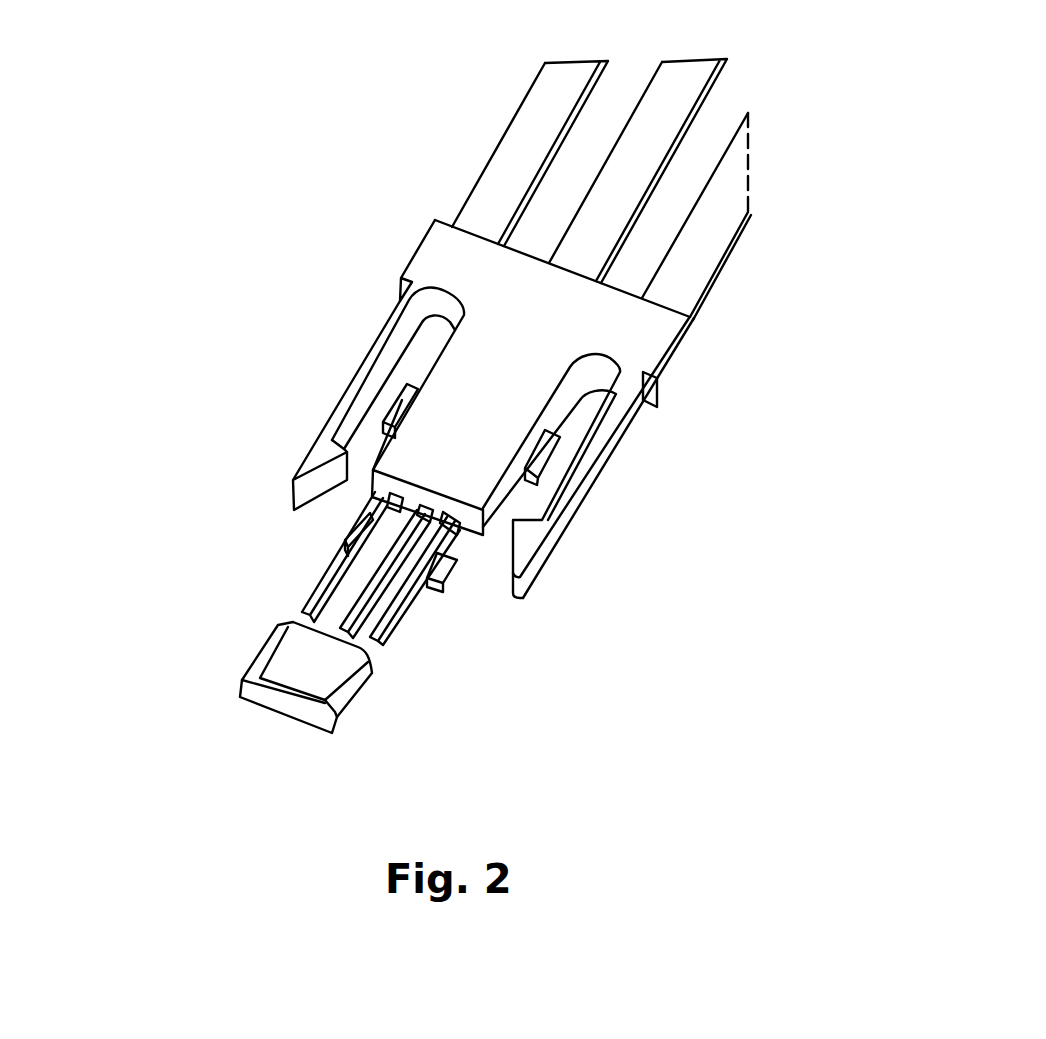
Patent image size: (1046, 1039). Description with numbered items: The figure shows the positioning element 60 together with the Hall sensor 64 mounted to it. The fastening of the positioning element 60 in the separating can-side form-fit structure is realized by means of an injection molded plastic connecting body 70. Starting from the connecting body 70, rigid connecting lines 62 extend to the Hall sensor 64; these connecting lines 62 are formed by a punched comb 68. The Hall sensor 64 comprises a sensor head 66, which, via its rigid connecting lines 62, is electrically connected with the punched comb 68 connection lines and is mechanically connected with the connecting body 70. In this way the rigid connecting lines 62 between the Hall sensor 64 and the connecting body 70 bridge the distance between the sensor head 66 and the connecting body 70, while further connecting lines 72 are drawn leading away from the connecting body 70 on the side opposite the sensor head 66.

The positioning element 60 is at (312, 298).
The connecting lines 62 is at (340, 620).
The Hall sensor 64 is at (233, 666).
The sensor head 66 is at (345, 696).
The punched comb 68 is at (440, 600).
The connecting body 70 is at (641, 337).
The connecting lines 72 is at (535, 120).